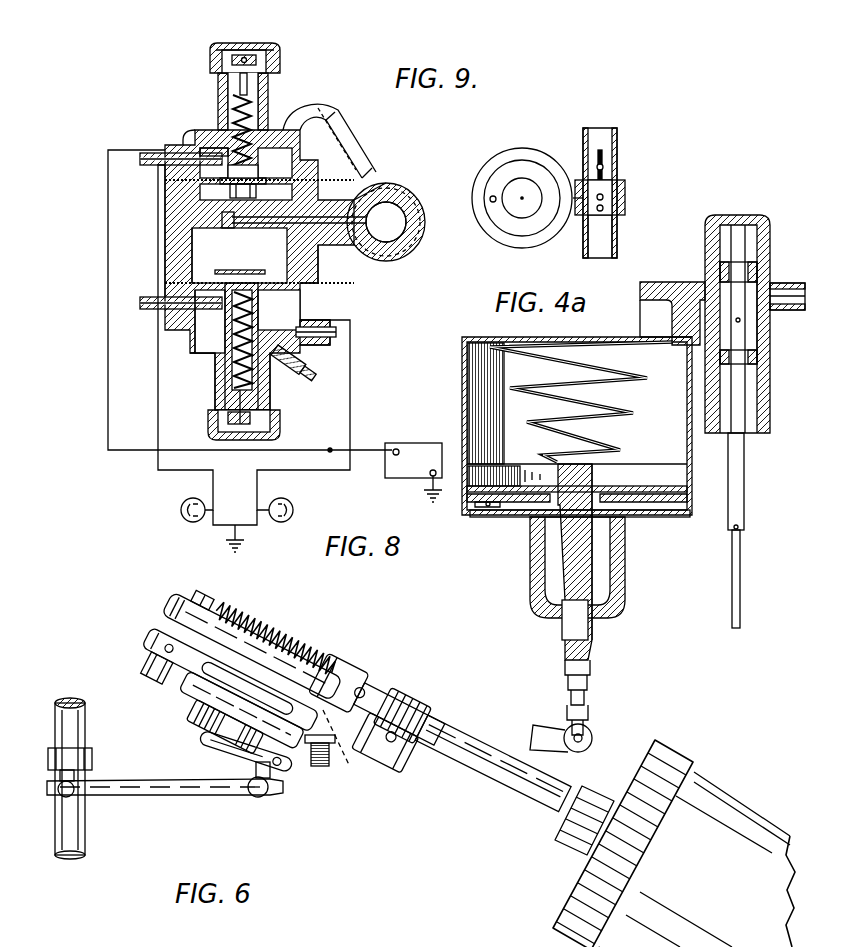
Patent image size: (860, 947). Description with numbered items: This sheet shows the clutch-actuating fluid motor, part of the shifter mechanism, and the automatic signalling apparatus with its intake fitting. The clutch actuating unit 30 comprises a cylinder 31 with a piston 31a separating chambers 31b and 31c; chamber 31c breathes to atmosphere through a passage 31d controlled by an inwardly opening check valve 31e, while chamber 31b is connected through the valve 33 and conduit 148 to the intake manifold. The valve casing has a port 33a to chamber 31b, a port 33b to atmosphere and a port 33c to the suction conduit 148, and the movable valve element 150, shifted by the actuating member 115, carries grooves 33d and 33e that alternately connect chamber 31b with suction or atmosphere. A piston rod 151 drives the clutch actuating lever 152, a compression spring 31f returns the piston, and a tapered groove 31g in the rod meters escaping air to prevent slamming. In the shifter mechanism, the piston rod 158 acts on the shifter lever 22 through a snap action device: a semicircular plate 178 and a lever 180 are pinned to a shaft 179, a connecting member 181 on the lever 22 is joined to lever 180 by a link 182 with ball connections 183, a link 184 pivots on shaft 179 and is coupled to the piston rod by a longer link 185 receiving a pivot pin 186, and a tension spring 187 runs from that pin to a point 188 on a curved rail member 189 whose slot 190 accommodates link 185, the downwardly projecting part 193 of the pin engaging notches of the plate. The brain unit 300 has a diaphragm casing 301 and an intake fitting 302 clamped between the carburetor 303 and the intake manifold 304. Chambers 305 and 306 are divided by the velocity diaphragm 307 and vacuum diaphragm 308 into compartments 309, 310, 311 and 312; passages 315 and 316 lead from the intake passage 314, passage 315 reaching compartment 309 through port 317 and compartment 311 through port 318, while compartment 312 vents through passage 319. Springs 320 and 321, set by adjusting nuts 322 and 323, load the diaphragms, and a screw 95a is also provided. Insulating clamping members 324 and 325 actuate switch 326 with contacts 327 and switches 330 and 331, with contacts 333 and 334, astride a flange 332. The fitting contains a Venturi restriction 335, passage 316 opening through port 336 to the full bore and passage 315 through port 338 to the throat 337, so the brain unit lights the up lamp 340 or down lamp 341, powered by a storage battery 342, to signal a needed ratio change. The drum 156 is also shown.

In FIG. 8, the brain unit 300 is at (195, 109).
In FIG. 8, the diaphragm casing 301 is at (172, 261).
In FIG. 8, the intake fitting 302 is at (415, 205).
In FIG. 8, the chamber 305 is at (200, 192).
In FIG. 8, the chamber 306 is at (200, 275).
In FIG. 8, the velocity diaphragm 307 is at (266, 184).
In FIG. 8, the vacuum diaphragm 308 is at (275, 272).
In FIG. 8, the compartment 309 is at (258, 197).
In FIG. 8, the compartment 310 is at (258, 171).
In FIG. 8, the compartment 311 is at (248, 258).
In FIG. 8, the compartment 312 is at (256, 298).
In FIG. 8, the passage 314 is at (410, 228).
In FIG. 9, the passage 314 is at (602, 182).
In FIG. 8, the passage 315 is at (328, 245).
In FIG. 8, the passage 316 is at (325, 108).
In FIG. 8, the port 317 is at (215, 182).
In FIG. 8, the port 318 is at (262, 236).
In FIG. 8, the vent passage 319 is at (200, 360).
In FIG. 9, the vent passage 319 is at (490, 201).
In FIG. 8, the tension spring 320 is at (262, 95).
In FIG. 8, the tension spring 321 is at (218, 388).
In FIG. 8, the adjusting nut 322 is at (240, 46).
In FIG. 8, the adjusting nut 323 is at (275, 438).
In FIG. 8, the clamping member 324 is at (258, 150).
In FIG. 8, the clamping member 325 is at (300, 292).
In FIG. 8, the switch 326 is at (195, 134).
In FIG. 8, the contacts 327 is at (212, 163).
In FIG. 8, the switch 330 is at (170, 320).
In FIG. 8, the switch 331 is at (332, 338).
In FIG. 8, the flange 332 is at (305, 312).
In FIG. 8, the contacts 333 is at (205, 318).
In FIG. 8, the contacts 334 is at (330, 345).
In FIG. 9, the restriction 335 is at (584, 215).
In FIG. 8, the port 336 is at (390, 184).
In FIG. 9, the port 336 is at (626, 196).
In FIG. 9, the throat 337 is at (626, 208).
In FIG. 8, the port 338 is at (366, 217).
In FIG. 9, the port 338 is at (604, 210).
In FIG. 8, the up signal lamp 340 is at (184, 500).
In FIG. 8, the down signal lamp 341 is at (290, 502).
In FIG. 8, the storage battery 342 is at (420, 443).
In FIG. 8, the screw 95a is at (298, 385).
In FIG. 9, the carburetor 303 is at (618, 162).
In FIG. 9, the intake manifold 304 is at (618, 247).
In FIG. 4A, the clutch actuating unit 30 is at (594, 326).
In FIG. 4A, the fluid motor cylinder 31 is at (462, 392).
In FIG. 4A, the piston 31a is at (665, 518).
In FIG. 4A, the chamber 31b is at (484, 345).
In FIG. 4A, the chamber 31c is at (632, 520).
In FIG. 4A, the passage 31d is at (486, 512).
In FIG. 4A, the check valve 31e is at (515, 470).
In FIG. 4A, the compression spring 31f is at (620, 412).
In FIG. 4A, the tapered groove 31g is at (594, 632).
In FIG. 4A, the valve 33 is at (770, 400).
In FIG. 4A, the port 33a is at (668, 286).
In FIG. 4A, the port 33b is at (760, 370).
In FIG. 4A, the port 33c is at (740, 322).
In FIG. 4A, the groove 33d is at (760, 272).
In FIG. 4A, the groove 33e is at (760, 352).
In FIG. 4A, the conduit 148 is at (796, 283).
In FIG. 4A, the movable valve element 150 is at (760, 428).
In FIG. 4A, the actuating member 115 is at (744, 578).
In FIG. 4A, the piston rod 151 is at (566, 632).
In FIG. 4A, the clutch actuating lever 152 is at (545, 728).
In FIG. 6, the shifter lever 22 is at (68, 705).
In FIG. 6, the drum 156 is at (722, 800).
In FIG. 6, the piston rod 158 is at (490, 772).
In FIG. 6, the semicircular plate 178 is at (320, 766).
In FIG. 6, the shaft 179 is at (205, 735).
In FIG. 6, the lever 180 is at (246, 752).
In FIG. 6, the connecting member 181 is at (94, 756).
In FIG. 6, the link 182 is at (192, 782).
In FIG. 6, the ball connections 183 is at (62, 796).
In FIG. 6, the link 184 is at (198, 662).
In FIG. 6, the link 185 is at (242, 710).
In FIG. 6, the pivot pin 186 is at (212, 598).
In FIG. 6, the tension spring 187 is at (296, 642).
In FIG. 6, the point 188 is at (368, 692).
In FIG. 6, the rail member 189 is at (355, 690).
In FIG. 6, the slot 190 is at (349, 742).
In FIG. 6, the downwardly projecting part 193 is at (150, 660).